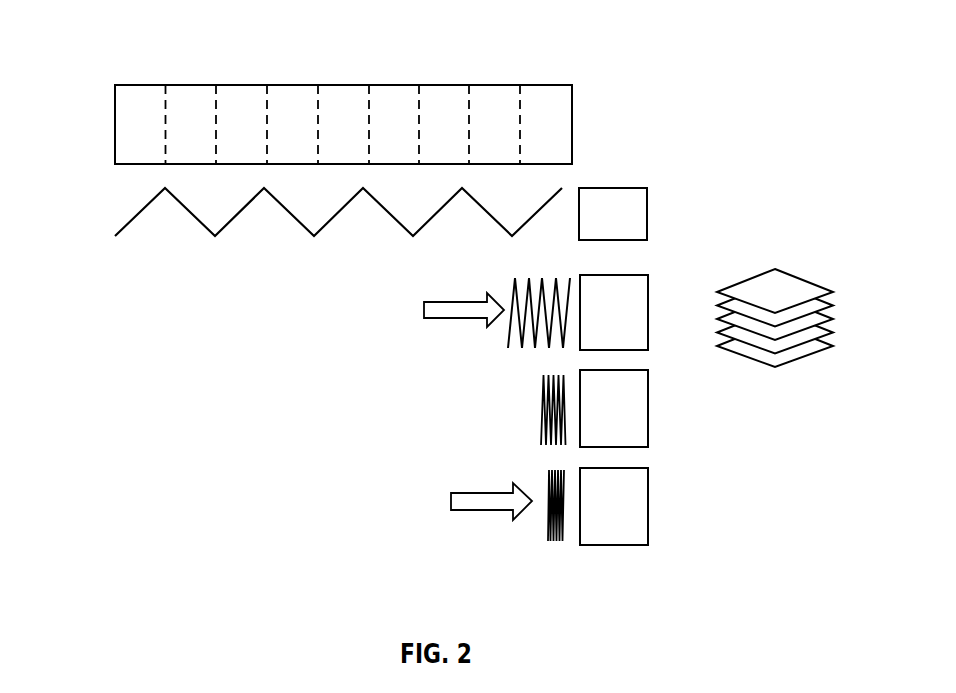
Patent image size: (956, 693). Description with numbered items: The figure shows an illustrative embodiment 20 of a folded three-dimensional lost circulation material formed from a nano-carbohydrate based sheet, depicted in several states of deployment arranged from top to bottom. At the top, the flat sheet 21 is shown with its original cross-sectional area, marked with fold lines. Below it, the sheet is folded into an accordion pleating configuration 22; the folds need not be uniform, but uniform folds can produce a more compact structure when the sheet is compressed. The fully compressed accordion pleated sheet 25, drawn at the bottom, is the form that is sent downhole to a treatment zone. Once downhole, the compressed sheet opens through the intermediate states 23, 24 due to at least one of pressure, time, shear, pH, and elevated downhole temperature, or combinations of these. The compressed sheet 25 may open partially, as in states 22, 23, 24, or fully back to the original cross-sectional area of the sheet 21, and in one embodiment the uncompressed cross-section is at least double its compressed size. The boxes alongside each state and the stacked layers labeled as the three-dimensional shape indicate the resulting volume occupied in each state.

The illustrative embodiment 20 is at (704, 43).
The sheet 21 is at (101, 106).
The accordion pleating configuration 22 is at (101, 206).
The partially opened state 23 is at (415, 309).
The partially opened state 24 is at (525, 422).
The compressed accordion pleated sheet 25 is at (431, 499).